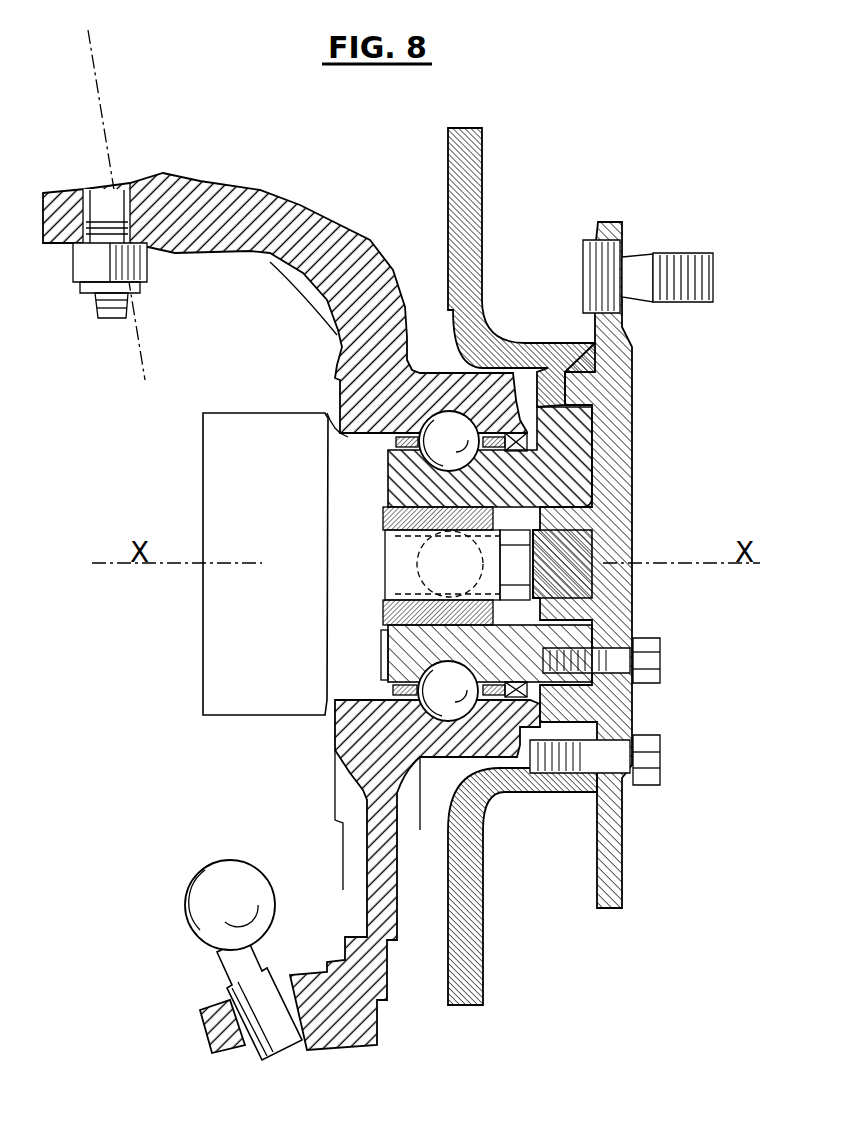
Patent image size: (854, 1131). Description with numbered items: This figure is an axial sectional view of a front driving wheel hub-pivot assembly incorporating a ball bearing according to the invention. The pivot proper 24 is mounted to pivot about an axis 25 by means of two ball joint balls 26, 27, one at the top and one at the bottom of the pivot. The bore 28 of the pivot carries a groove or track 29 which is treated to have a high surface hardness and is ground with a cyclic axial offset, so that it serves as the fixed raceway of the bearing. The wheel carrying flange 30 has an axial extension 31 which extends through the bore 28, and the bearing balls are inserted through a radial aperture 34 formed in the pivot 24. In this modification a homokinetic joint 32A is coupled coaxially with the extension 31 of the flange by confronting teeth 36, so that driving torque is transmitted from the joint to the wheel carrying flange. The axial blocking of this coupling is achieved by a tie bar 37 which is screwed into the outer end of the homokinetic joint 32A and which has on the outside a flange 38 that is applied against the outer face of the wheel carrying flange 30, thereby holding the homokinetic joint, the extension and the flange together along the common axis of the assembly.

The pivot 24 is at (200, 190).
The axis 25 is at (112, 167).
The ball joint ball 26 is at (110, 205).
The ball joint ball 27 is at (245, 900).
The bore 28 is at (342, 440).
The groove or track 29 is at (442, 412).
The wheel carrying flange 30 is at (610, 370).
The axial extension 31 is at (527, 478).
The homokinetic joint 32A is at (225, 683).
The radial aperture 34 is at (425, 560).
The confronting teeth 36 is at (382, 668).
The tie bar 37 is at (522, 580).
The flange 38 is at (612, 475).